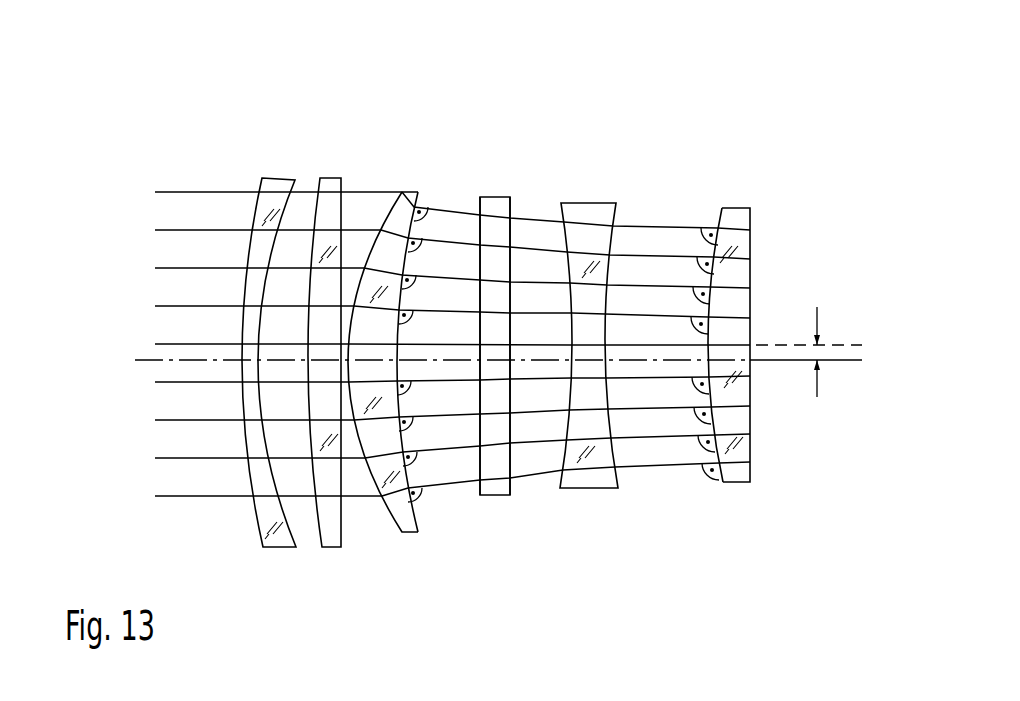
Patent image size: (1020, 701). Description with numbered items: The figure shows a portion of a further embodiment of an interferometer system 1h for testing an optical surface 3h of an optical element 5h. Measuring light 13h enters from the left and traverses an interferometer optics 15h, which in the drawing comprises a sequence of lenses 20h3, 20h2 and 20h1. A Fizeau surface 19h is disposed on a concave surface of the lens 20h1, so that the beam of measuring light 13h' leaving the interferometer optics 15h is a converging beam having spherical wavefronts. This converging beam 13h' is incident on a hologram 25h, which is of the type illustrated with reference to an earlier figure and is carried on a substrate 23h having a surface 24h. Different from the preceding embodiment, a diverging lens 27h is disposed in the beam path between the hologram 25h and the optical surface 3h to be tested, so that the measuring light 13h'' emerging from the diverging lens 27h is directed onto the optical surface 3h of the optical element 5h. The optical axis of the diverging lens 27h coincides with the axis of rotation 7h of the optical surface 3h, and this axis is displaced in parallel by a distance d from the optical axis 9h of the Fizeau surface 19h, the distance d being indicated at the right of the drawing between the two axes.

The interferometer system 1h is at (300, 96).
The measuring light 13h is at (278, 310).
The lens 20h3 is at (280, 178).
The lens 20h2 is at (330, 178).
The lens 20h1 is at (408, 192).
The Fizeau surface 19h is at (423, 528).
The beam of measuring light 13h' is at (460, 317).
The interferometer optics 15h is at (541, 116).
The substrate 23h is at (495, 496).
The surface of substrate 24h is at (475, 493).
The hologram 25h is at (512, 494).
The diverging lens 27h is at (588, 203).
The measuring light 13h'' is at (656, 314).
The optical surface 3h is at (717, 215).
The optical element 5h is at (742, 208).
The axis of rotation 7h is at (843, 345).
The optical axis 9h is at (845, 361).
The distance d is at (807, 356).